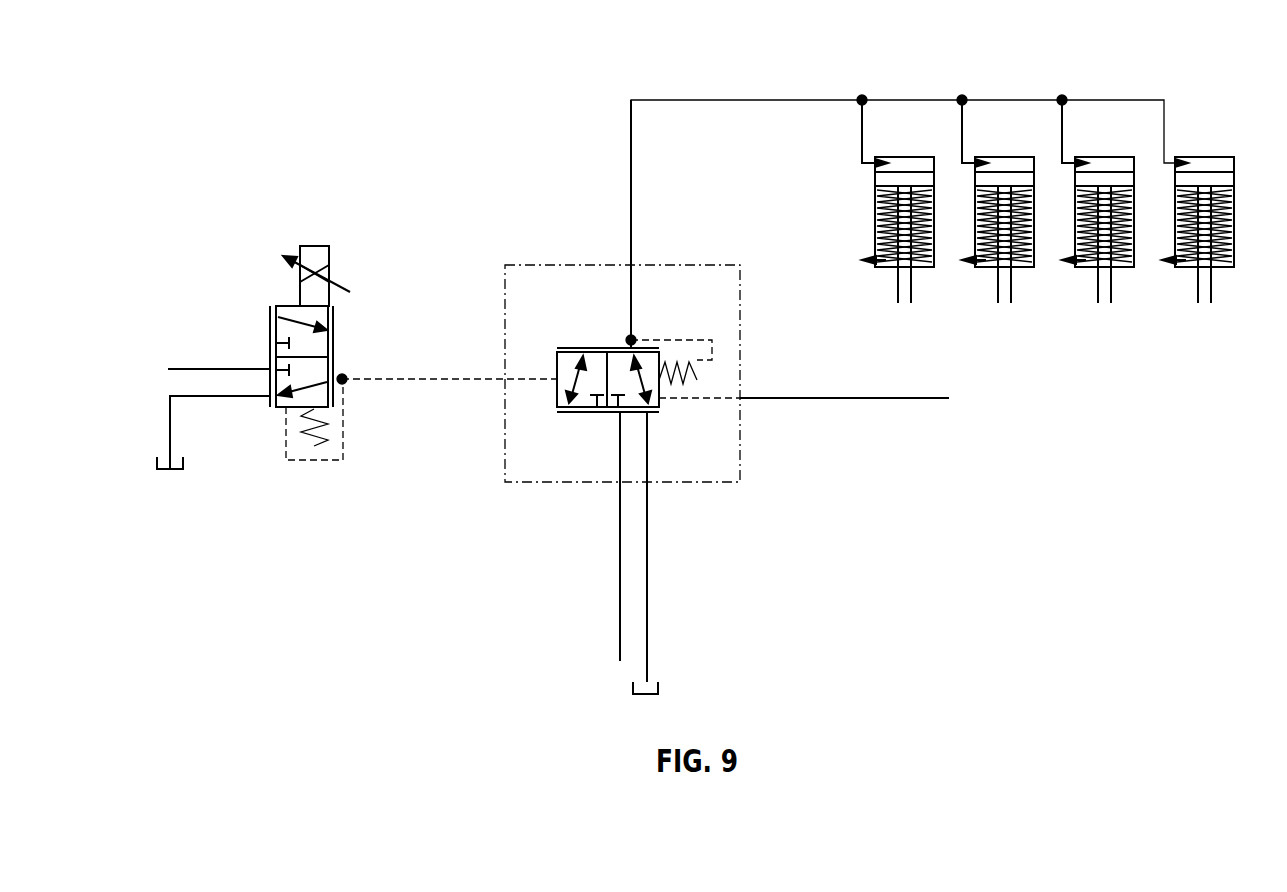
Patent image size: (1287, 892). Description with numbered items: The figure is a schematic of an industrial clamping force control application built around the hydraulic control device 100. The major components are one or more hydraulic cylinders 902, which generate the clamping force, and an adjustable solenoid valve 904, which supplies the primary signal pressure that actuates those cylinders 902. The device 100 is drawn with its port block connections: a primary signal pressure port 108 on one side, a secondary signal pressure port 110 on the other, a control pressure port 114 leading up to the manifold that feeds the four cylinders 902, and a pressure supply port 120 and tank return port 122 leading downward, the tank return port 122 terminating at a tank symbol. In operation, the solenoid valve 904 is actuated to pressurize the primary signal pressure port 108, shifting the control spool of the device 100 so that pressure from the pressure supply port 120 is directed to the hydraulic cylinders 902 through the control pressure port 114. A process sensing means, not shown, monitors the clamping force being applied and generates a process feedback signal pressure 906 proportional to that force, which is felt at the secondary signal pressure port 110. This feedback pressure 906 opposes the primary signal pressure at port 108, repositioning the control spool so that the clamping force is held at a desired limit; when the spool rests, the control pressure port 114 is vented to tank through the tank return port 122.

The device 100 is at (655, 397).
The primary signal pressure port 108 is at (505, 380).
The secondary signal pressure port 110 is at (740, 398).
The control pressure port 114 is at (631, 265).
The pressure supply port 120 is at (620, 482).
The tank return port 122 is at (647, 482).
The hydraulic cylinders 902 is at (1143, 330).
The adjustable solenoid valve 904 is at (257, 322).
The process feedback signal pressure 906 is at (927, 398).